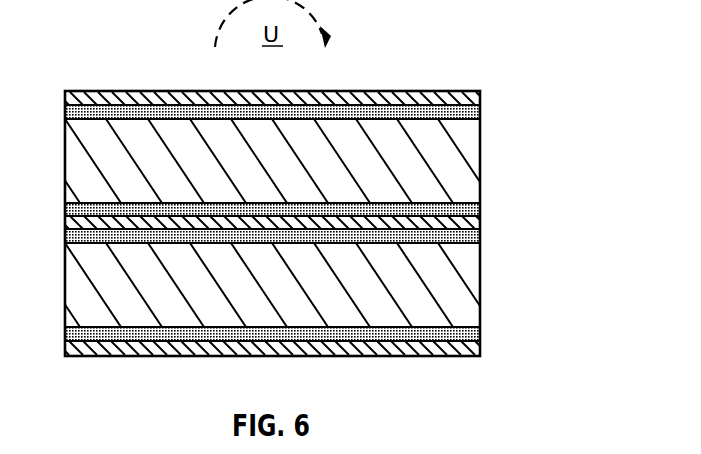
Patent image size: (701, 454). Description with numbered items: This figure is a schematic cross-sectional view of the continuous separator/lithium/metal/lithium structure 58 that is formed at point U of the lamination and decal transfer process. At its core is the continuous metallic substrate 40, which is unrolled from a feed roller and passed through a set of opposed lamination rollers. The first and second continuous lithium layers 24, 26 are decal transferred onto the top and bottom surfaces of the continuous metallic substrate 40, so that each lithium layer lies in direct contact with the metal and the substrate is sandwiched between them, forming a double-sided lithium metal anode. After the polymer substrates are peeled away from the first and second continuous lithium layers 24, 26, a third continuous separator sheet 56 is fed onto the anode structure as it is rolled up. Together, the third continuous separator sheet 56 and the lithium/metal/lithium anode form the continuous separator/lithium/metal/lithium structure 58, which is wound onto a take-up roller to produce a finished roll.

The first continuous lithium layer 24 is at (481, 209).
The second continuous lithium layer 26 is at (481, 112).
The continuous metallic substrate 40 is at (288, 171).
The third continuous separator sheet 56 is at (78, 212).
The continuous separator/lithium/metal/lithium structure 58 is at (376, 74).